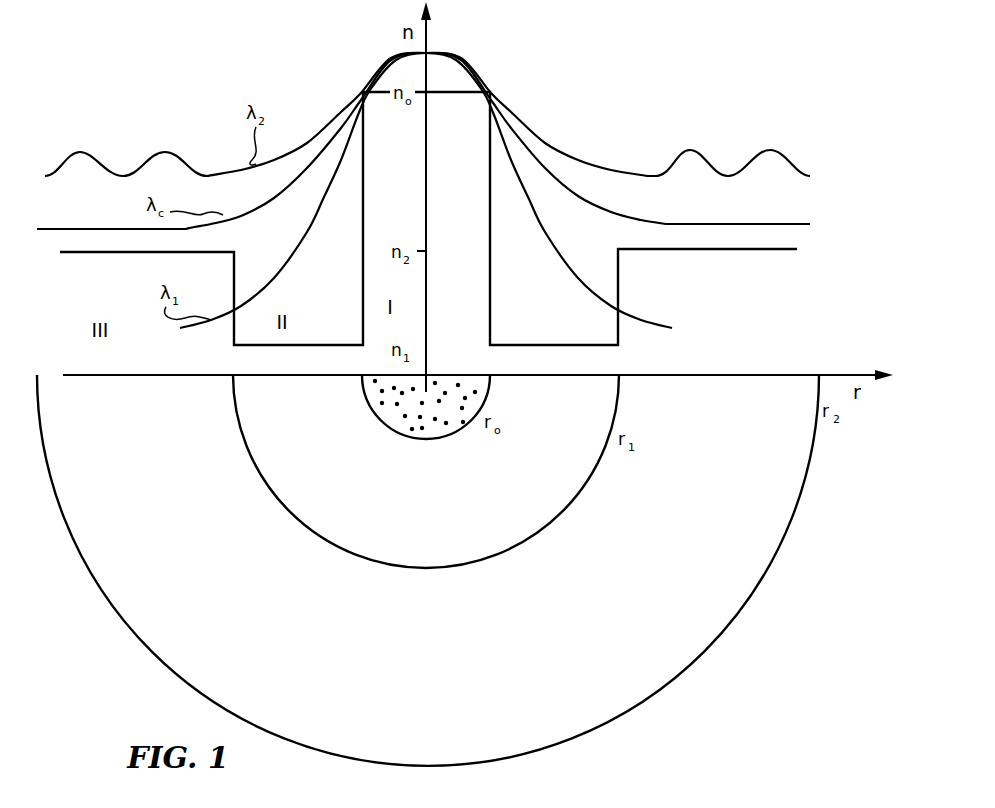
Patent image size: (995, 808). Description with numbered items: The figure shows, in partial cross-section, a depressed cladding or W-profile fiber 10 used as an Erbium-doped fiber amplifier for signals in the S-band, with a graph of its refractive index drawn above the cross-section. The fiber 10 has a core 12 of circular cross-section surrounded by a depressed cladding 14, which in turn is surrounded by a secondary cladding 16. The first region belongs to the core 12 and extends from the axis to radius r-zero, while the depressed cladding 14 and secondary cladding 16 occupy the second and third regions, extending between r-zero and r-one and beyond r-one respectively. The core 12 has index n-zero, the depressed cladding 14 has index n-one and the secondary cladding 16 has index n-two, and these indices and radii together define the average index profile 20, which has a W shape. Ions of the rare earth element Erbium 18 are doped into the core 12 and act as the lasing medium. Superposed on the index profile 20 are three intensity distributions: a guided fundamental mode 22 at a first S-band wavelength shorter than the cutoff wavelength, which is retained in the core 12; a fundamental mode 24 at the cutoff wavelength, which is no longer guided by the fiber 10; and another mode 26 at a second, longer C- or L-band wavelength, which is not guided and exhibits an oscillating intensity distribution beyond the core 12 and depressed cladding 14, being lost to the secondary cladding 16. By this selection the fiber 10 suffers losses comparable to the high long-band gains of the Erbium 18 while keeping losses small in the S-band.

The W-profile fiber 10 is at (106, 655).
The core 12 is at (386, 425).
The depressed cladding 14 is at (490, 557).
The secondary cladding 16 is at (670, 680).
The Erbium 18 is at (447, 423).
The average index profile 20 is at (345, 214).
The guided fundamental mode 22 is at (554, 240).
The fundamental mode 24 is at (628, 211).
The mode 26 is at (666, 162).